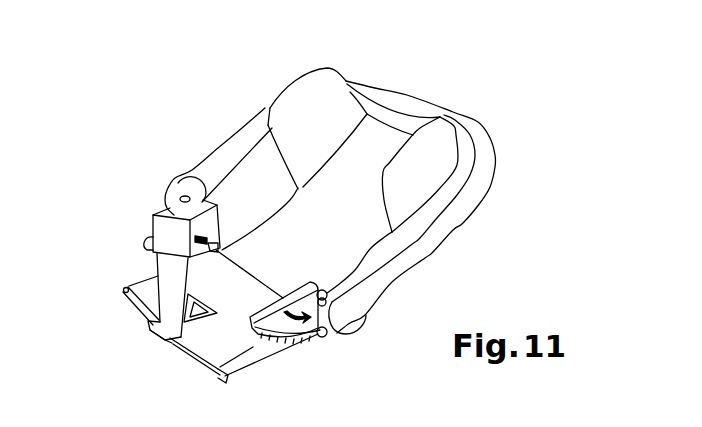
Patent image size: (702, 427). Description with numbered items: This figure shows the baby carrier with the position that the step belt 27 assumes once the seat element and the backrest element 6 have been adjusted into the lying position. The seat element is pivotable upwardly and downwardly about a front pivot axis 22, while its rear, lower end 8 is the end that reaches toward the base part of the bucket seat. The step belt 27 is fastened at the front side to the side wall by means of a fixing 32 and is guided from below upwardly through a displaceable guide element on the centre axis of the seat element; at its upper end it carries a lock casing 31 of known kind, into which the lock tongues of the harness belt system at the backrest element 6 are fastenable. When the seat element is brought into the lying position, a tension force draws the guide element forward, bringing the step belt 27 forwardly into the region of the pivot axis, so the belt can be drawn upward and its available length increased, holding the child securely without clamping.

The backrest element 6 is at (382, 130).
The lock casing 31 is at (165, 235).
The step belt 27 is at (152, 276).
The fixing 32 is at (162, 333).
The pivot axis 22 is at (223, 377).
The lower end 8 is at (229, 262).